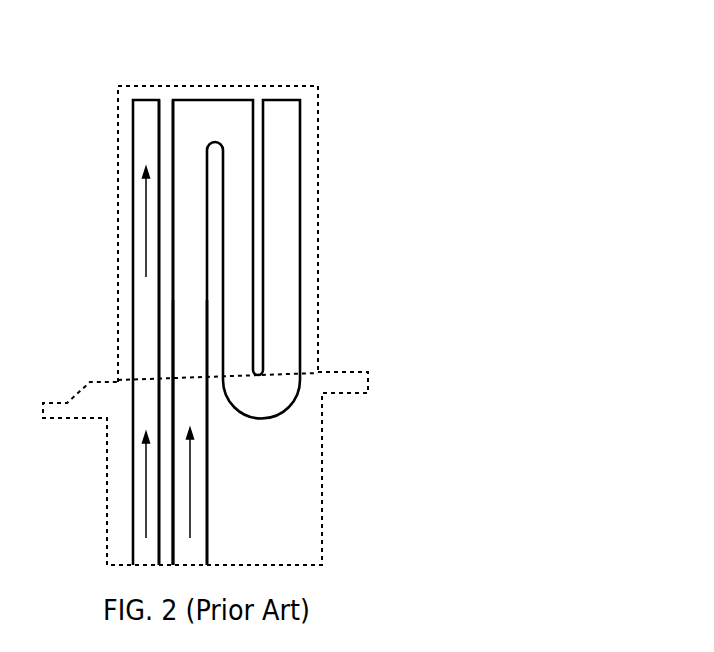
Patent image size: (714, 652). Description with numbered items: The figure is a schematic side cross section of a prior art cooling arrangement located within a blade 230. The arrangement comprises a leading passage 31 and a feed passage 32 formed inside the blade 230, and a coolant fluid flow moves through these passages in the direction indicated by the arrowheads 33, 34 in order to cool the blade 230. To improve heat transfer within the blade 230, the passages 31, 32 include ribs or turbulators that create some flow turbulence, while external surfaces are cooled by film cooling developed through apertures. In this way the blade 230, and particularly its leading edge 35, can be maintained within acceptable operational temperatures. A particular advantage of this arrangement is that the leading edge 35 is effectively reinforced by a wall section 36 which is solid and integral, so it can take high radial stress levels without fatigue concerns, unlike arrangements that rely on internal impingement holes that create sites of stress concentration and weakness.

The leading passage 31 is at (160, 228).
The feed passage 32 is at (187, 356).
The arrowheads 33 is at (145, 213).
The arrowheads 34 is at (190, 477).
The leading edge 35 is at (118, 315).
The wall section 36 is at (165, 313).
The blade 230 is at (300, 535).